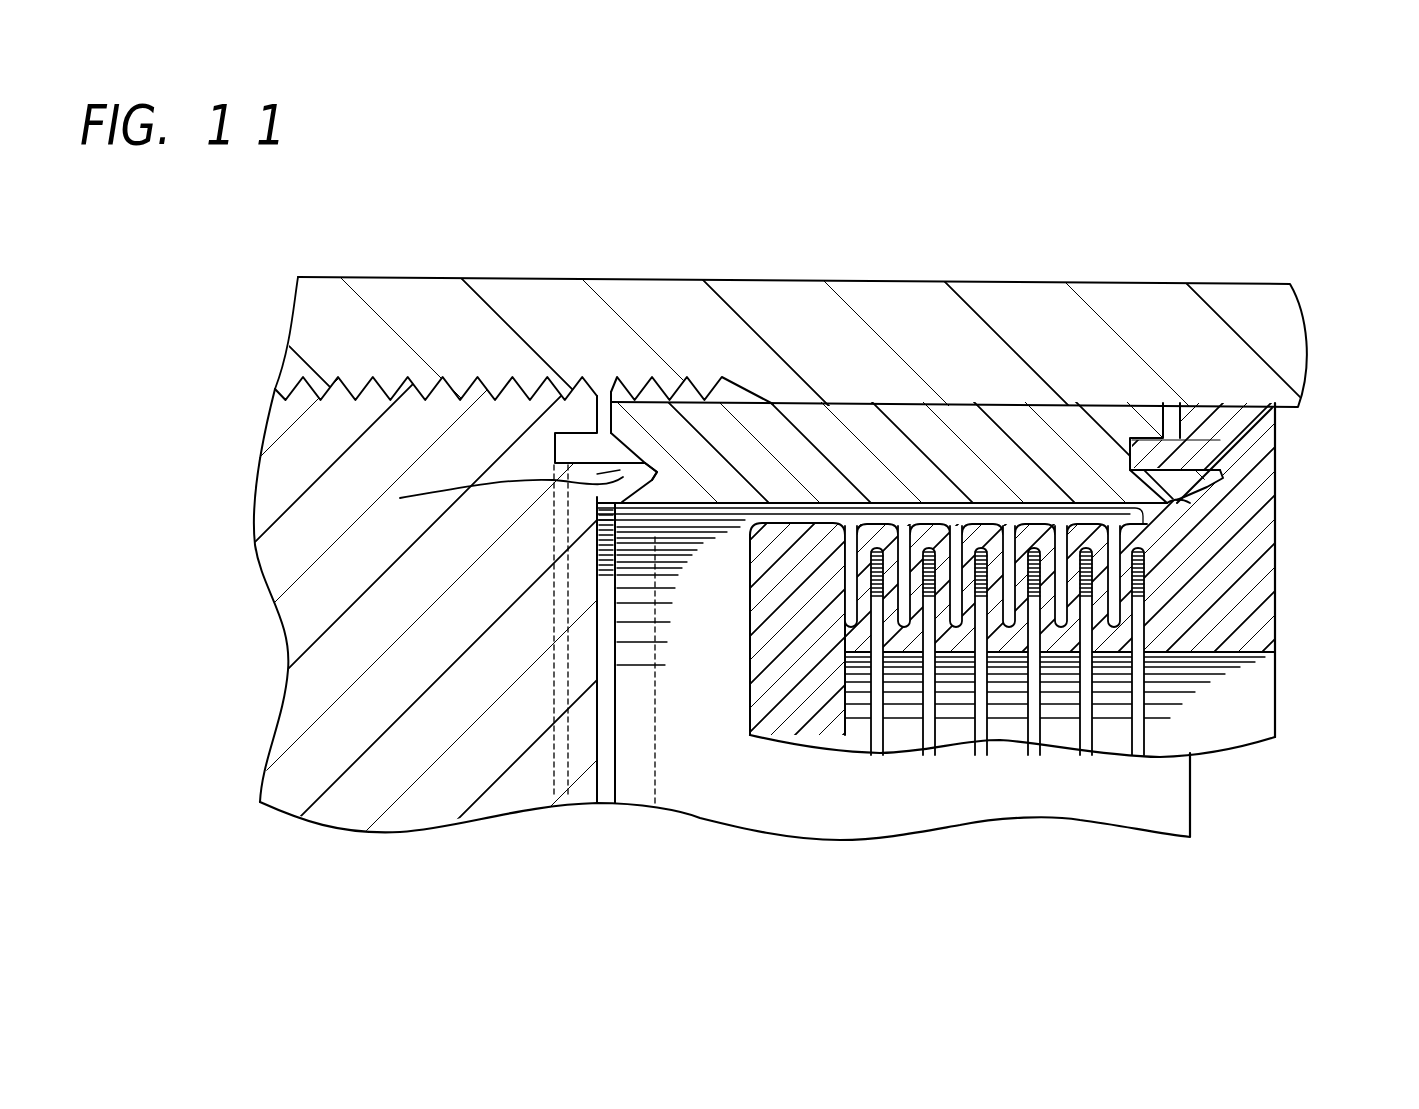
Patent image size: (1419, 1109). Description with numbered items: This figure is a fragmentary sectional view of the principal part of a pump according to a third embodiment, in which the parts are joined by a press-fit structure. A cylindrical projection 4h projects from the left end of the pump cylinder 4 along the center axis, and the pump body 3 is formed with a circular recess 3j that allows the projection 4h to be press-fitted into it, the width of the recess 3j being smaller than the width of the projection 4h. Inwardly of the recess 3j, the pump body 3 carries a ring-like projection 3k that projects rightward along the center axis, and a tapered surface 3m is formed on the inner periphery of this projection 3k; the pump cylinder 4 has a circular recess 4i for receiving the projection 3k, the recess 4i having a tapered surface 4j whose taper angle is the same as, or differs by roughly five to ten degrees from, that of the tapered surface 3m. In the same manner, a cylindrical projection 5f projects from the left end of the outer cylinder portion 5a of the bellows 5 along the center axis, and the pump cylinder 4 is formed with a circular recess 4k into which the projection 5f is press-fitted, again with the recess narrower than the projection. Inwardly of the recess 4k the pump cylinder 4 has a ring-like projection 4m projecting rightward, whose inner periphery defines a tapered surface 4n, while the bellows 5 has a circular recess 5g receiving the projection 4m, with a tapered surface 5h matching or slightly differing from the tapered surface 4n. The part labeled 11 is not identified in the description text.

The pump body 3 is at (322, 672).
The circular recess 3j is at (657, 463).
The ring-like projection 3k is at (597, 474).
The tapered surface 3m is at (677, 480).
The pump cylinder 4 is at (907, 402).
The cylindrical projection 4h is at (583, 448).
The circular recess 4i is at (640, 468).
The tapered surface 4j is at (643, 477).
The circular recess 4k is at (1147, 447).
The ring-like projection 4m is at (1170, 403).
The tapered surface 4n is at (1175, 503).
The bellows 5 is at (800, 745).
The outer cylinder portion 5a is at (1276, 435).
The cylindrical projection 5f is at (1180, 463).
The circular recess 5g is at (1212, 465).
The tapered surface 5h is at (1180, 503).
The cover 11 is at (767, 282).